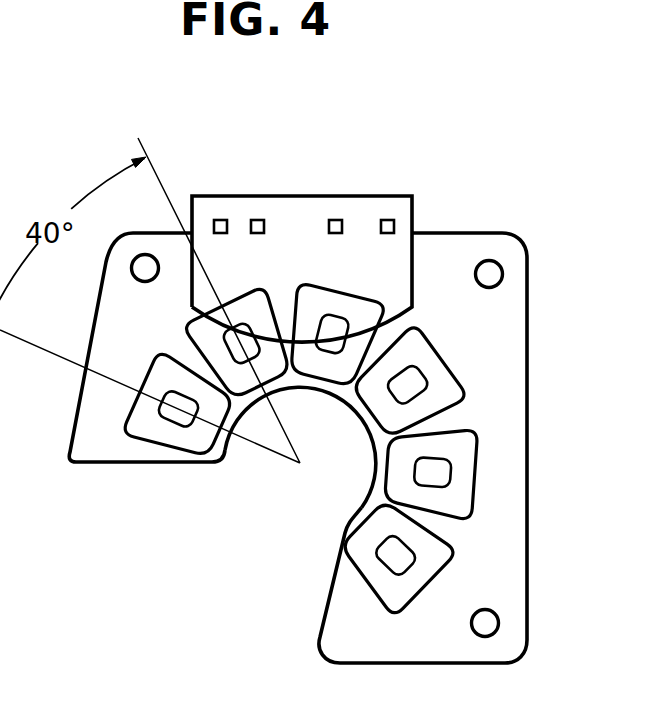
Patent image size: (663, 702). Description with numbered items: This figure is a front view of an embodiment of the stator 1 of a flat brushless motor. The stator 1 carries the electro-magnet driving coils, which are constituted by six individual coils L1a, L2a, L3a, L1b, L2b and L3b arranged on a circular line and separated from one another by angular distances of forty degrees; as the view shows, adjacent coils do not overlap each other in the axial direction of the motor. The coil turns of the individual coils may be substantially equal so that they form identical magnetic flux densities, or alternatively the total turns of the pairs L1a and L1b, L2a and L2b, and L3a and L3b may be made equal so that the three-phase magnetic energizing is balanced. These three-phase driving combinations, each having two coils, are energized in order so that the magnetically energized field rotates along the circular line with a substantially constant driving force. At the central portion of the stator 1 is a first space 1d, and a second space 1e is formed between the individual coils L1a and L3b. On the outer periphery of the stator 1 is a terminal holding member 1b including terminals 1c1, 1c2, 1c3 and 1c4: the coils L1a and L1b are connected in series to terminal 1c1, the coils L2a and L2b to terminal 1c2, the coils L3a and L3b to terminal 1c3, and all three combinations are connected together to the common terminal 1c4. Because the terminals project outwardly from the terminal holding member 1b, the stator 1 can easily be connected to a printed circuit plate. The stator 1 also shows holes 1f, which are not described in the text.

The stator 1 is at (513, 545).
The terminal holding member 1b is at (403, 263).
The terminal 1c1 is at (220, 218).
The terminal 1c2 is at (257, 218).
The terminal 1c3 is at (335, 218).
The terminal 1c4 is at (387, 218).
The first space 1d is at (318, 505).
The second space 1e is at (278, 487).
The mounting hole 1f is at (145, 254).
The individual coil L1a is at (130, 418).
The individual coil L2a is at (203, 332).
The individual coil L3a is at (375, 318).
The individual coil L1b is at (431, 366).
The individual coil L2b is at (466, 477).
The individual coil L3b is at (389, 592).